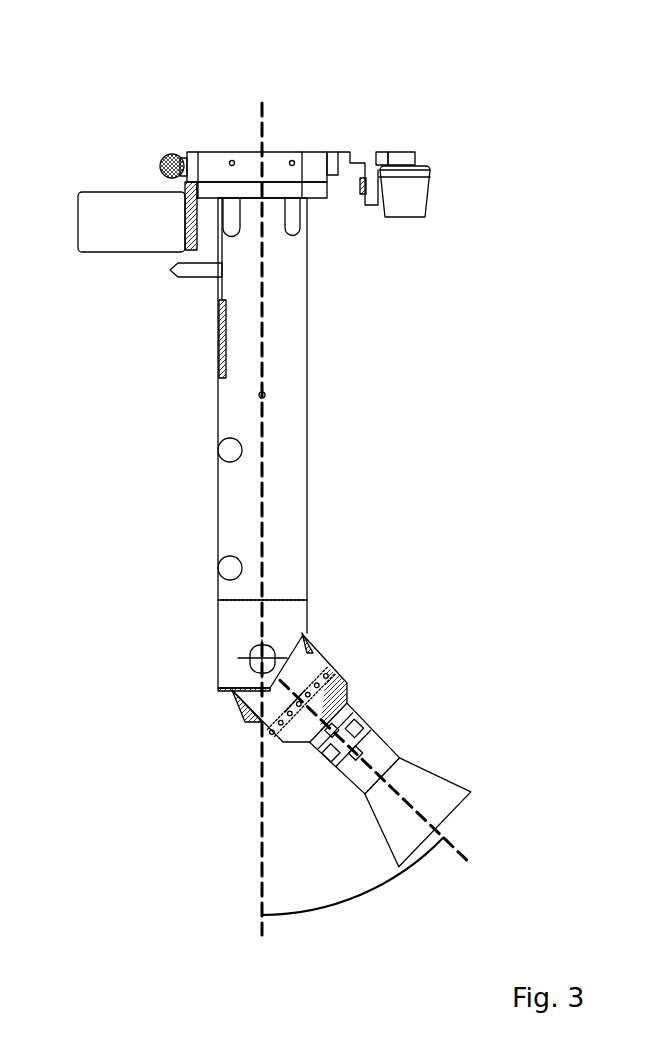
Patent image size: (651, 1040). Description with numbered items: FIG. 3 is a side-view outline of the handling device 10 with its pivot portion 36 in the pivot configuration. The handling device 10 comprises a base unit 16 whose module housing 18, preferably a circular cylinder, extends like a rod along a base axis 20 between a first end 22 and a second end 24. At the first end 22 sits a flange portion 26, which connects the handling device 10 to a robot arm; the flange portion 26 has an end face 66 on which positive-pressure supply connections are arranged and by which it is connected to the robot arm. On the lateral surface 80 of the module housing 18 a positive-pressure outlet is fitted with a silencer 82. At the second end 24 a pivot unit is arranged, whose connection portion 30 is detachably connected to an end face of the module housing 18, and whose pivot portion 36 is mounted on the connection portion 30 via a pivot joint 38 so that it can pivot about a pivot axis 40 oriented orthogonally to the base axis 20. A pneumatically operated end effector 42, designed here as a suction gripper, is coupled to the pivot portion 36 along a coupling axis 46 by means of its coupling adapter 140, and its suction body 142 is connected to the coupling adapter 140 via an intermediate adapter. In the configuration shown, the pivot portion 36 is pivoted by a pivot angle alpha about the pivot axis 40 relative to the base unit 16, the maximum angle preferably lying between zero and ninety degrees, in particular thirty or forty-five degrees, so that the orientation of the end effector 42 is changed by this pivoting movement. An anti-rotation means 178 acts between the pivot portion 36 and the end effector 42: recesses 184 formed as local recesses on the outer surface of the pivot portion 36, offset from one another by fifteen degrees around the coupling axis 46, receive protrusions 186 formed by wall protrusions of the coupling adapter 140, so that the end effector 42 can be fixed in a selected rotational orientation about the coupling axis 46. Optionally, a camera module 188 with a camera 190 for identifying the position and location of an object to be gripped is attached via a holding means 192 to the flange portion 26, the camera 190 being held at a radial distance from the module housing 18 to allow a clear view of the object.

The handling device 10 is at (262, 83).
The base unit 16 is at (353, 398).
The module housing 18 is at (222, 395).
The base axis 20 is at (262, 834).
The first end 22 is at (318, 212).
The second end 24 is at (324, 580).
The flange portion 26 is at (285, 151).
The connection portion 30 is at (300, 612).
The pivot portion 36 is at (318, 658).
The pivot joint 38 is at (258, 667).
The pivot axis 40 is at (259, 656).
The end effector 42 is at (448, 708).
The coupling axis 46 is at (458, 848).
The end face 66 is at (232, 151).
The lateral surface 80 is at (218, 503).
The silencer 82 is at (95, 225).
The coupling adapter 140 is at (340, 693).
The suction body 142 is at (428, 788).
The anti-rotation means 178 is at (358, 668).
The recesses 184 is at (293, 722).
The protrusions 186 is at (302, 702).
The camera module 188 is at (400, 140).
The camera 190 is at (413, 201).
The holding means 192 is at (348, 151).